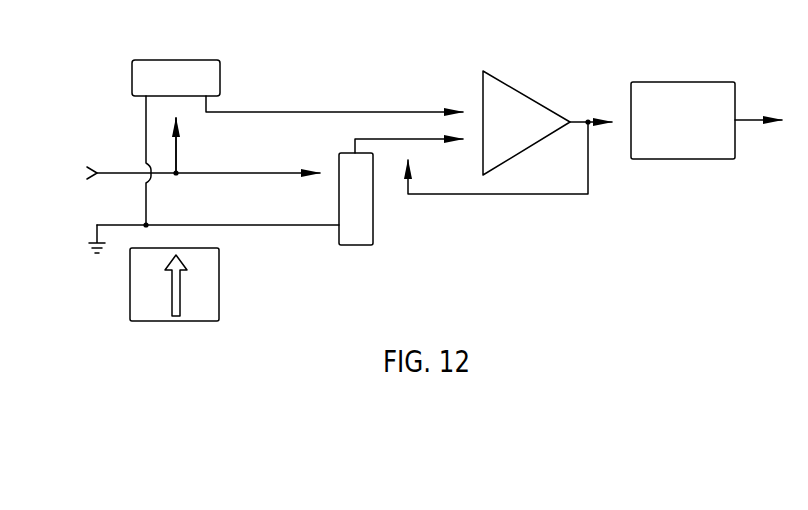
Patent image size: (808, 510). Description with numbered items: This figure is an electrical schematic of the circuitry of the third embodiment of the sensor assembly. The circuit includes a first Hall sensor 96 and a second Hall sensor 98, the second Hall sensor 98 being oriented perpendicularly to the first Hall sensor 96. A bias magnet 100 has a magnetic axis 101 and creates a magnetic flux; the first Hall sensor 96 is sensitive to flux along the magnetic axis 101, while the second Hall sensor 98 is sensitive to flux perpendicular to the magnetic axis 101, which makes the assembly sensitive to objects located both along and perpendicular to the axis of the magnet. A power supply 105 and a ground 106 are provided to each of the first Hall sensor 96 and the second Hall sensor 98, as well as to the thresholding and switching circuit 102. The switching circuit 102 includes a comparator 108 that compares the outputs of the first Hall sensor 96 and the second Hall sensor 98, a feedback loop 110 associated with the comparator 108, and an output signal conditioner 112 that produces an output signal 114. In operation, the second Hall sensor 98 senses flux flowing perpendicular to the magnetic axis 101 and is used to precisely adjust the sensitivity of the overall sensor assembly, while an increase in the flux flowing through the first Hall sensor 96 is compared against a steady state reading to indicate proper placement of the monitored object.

The first Hall sensor 96 is at (187, 58).
The second Hall sensor 98 is at (373, 212).
The bias magnet 100 is at (219, 262).
The magnetic axis 101 is at (170, 280).
The thresholding and switching circuit 102 is at (637, 40).
The power supply 105 is at (112, 170).
The ground 106 is at (96, 228).
The comparator 108 is at (510, 82).
The feedback loop 110 is at (540, 194).
The output signal conditioner 112 is at (690, 82).
The output signal 114 is at (755, 115).